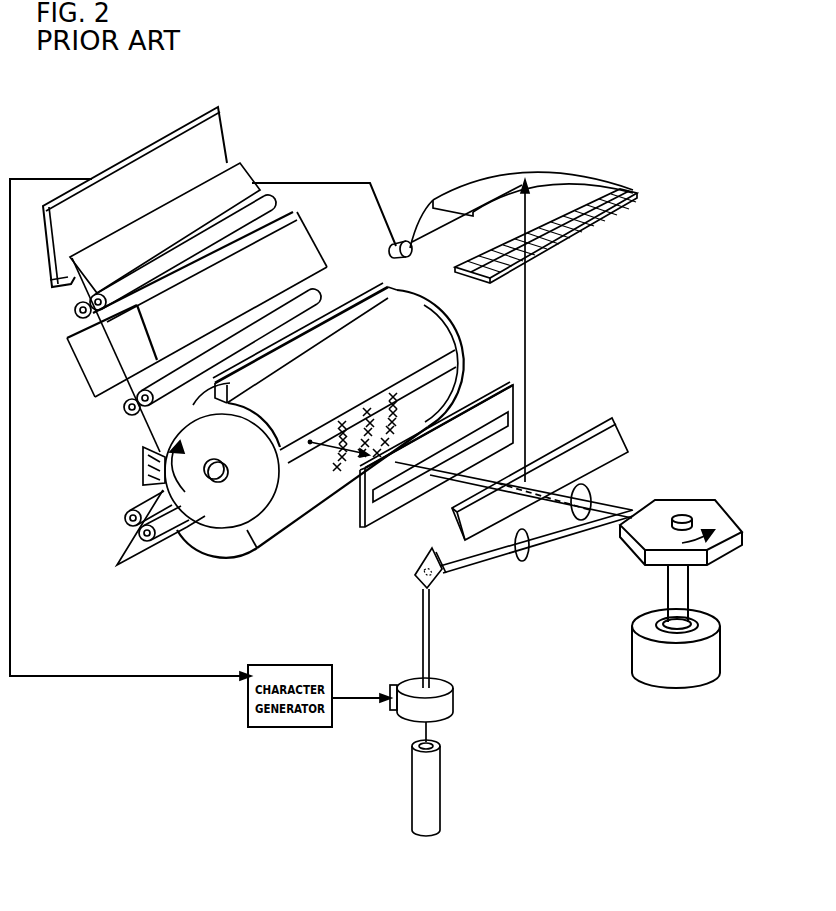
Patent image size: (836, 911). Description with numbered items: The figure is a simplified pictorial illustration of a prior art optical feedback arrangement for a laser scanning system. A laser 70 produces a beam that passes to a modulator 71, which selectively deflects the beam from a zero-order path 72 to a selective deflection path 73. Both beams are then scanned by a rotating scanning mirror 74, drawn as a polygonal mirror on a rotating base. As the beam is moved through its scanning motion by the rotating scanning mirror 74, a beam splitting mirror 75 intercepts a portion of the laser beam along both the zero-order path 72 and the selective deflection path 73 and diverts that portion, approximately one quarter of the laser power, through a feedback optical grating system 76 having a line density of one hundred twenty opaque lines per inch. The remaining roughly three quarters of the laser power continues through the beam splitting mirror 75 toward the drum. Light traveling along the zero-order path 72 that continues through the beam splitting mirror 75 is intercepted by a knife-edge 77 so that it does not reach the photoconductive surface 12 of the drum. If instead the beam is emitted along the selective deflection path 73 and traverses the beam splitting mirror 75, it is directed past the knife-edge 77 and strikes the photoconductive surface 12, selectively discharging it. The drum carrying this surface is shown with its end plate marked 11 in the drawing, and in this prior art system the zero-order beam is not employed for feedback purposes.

The drum end plate 11 is at (224, 439).
The photoconductive surface 12 is at (433, 360).
The laser 70 is at (441, 792).
The modulator 71 is at (455, 694).
The zero-order path 72 is at (421, 646).
The selective deflection path 73 is at (430, 627).
The rotating scanning mirror 74 is at (665, 510).
The beam splitting mirror 75 is at (612, 437).
The feedback optical grating system 76 is at (636, 228).
The knife-edge 77 is at (508, 402).